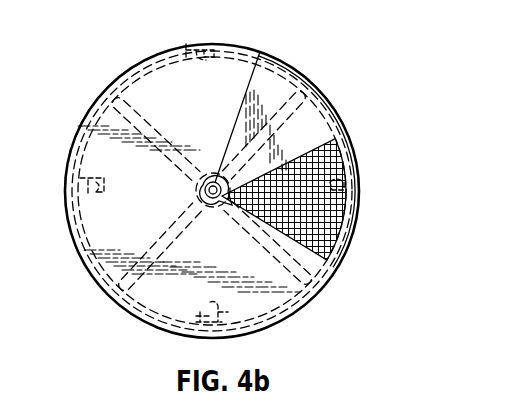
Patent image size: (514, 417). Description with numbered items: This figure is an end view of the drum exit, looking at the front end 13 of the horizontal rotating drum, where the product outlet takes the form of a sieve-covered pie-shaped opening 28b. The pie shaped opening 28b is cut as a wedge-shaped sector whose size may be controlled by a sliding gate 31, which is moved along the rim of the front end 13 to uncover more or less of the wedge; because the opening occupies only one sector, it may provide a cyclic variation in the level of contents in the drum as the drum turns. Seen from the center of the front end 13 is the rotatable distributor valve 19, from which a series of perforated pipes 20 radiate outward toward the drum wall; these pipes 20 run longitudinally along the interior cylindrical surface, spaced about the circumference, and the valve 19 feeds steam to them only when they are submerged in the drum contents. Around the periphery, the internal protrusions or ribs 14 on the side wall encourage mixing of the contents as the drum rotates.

The front end 13 is at (113, 159).
The internal protrusions or ribs 14 is at (186, 44).
The rotatable distributor valve 19 is at (192, 198).
The perforated pipes 20 is at (141, 77).
The pie shaped opening 28b is at (332, 238).
The sliding gate 31 is at (318, 121).